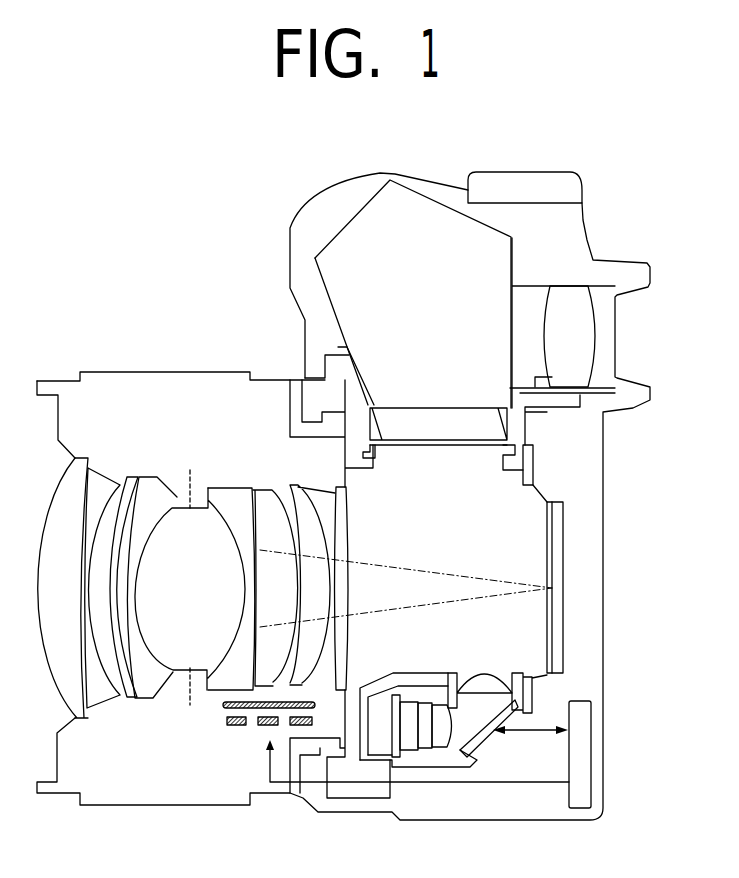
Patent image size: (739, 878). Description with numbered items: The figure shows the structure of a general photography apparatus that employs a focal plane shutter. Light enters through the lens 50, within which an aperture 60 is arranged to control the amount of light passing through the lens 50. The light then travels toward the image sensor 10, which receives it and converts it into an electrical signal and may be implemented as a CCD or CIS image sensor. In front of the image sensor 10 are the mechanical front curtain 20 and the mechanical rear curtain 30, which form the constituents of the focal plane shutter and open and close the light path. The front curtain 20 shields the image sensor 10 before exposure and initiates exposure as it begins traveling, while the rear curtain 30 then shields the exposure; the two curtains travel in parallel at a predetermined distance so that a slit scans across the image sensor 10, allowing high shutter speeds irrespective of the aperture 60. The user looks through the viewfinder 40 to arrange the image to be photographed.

The image sensor 10 is at (570, 588).
The mechanical front curtain 20 is at (553, 692).
The mechanical rear curtain 30 is at (552, 458).
The viewfinder 40 is at (630, 328).
The lens 50 is at (200, 357).
The aperture 60 is at (168, 472).